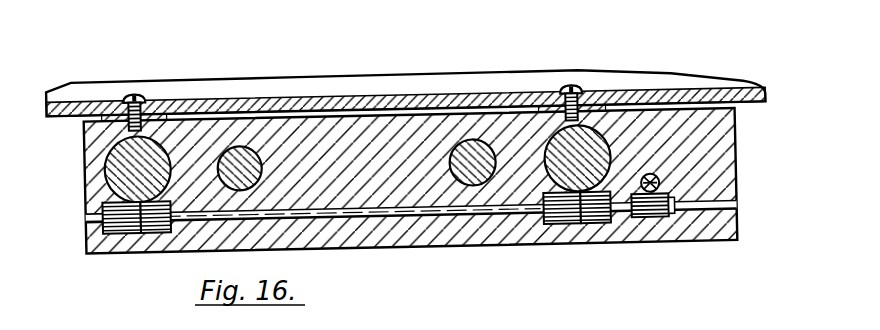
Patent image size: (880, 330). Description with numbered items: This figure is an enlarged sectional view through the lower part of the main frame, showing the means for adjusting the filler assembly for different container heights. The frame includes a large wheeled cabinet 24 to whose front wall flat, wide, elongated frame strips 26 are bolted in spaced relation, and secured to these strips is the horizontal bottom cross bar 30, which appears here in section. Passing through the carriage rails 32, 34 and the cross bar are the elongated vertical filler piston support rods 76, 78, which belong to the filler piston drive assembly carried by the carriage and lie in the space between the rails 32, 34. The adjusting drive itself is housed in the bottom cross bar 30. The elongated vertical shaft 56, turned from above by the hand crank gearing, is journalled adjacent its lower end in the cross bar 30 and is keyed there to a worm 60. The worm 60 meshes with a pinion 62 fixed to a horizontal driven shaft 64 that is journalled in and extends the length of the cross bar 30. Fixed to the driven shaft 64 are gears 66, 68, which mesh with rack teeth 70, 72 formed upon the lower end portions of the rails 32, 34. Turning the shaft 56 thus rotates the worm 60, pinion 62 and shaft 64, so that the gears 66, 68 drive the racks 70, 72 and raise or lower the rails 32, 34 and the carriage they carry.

The cabinet 24 is at (339, 96).
The frame strips 26 is at (142, 99).
The bottom cross bar 30 is at (413, 240).
The rail 32 is at (105, 182).
The rail 34 is at (548, 140).
The vertical shaft 56 is at (657, 182).
The worm 60 is at (672, 192).
The pinion 62 is at (660, 220).
The horizontal driven shaft 64 is at (622, 215).
The gear 66 is at (120, 235).
The gear 68 is at (560, 225).
The rack teeth 70 is at (146, 236).
The rack teeth 72 is at (578, 226).
The filler piston support rod 76 is at (240, 155).
The filler piston support rod 78 is at (468, 150).